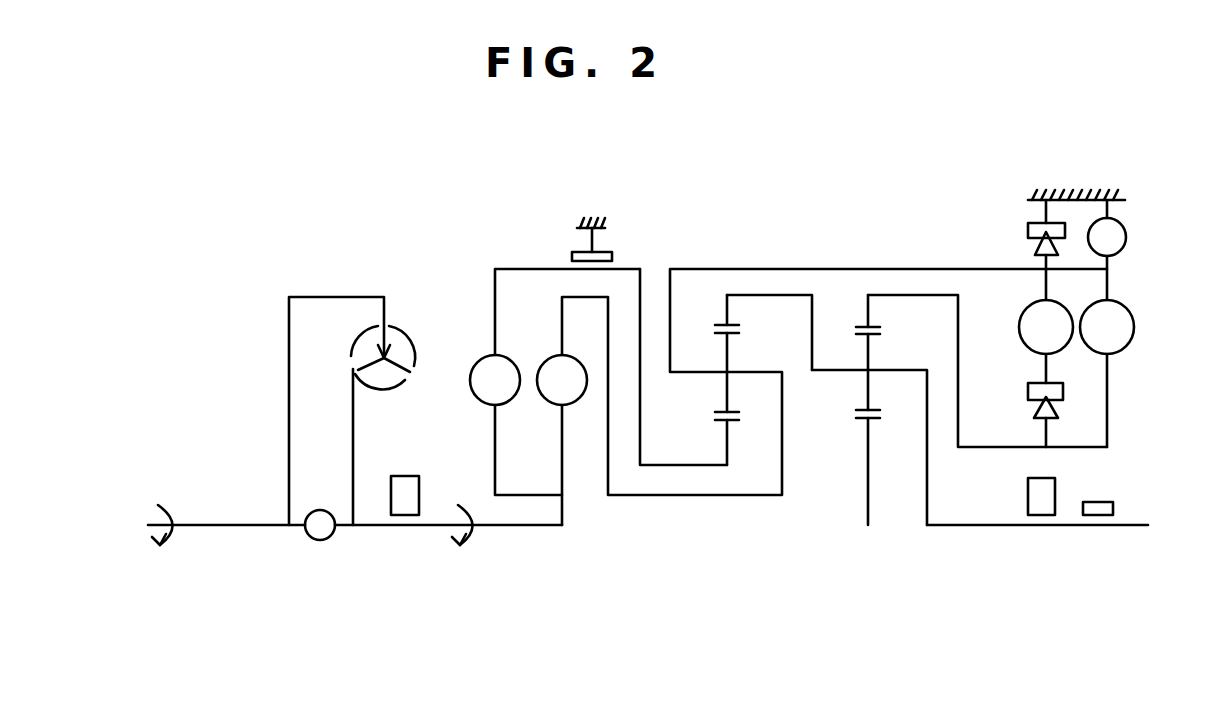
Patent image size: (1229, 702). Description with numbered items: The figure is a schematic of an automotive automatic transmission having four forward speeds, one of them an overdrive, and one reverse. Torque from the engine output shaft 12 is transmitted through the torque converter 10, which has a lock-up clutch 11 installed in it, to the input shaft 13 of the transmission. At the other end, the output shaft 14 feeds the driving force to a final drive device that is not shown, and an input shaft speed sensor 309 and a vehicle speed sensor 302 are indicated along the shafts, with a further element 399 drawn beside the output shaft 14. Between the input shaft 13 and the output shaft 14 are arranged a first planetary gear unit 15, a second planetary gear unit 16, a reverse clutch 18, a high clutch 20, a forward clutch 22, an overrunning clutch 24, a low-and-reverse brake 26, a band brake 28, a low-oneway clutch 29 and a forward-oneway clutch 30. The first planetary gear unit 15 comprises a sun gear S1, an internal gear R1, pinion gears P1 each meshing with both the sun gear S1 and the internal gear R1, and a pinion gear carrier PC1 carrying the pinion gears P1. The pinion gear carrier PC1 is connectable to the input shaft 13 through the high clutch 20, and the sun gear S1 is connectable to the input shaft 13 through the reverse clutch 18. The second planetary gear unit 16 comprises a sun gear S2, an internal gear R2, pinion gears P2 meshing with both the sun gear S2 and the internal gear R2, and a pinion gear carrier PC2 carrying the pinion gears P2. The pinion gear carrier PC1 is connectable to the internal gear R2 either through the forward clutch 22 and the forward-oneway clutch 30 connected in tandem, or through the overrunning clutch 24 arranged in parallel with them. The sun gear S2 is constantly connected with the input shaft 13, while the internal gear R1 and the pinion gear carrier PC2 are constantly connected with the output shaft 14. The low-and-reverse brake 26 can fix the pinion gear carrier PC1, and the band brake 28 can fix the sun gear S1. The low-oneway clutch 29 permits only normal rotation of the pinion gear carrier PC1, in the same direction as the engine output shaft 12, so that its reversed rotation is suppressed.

The torque converter 10 is at (410, 320).
The lock-up clutch 11 is at (322, 541).
The engine output shaft 12 is at (245, 525).
The input shaft 13 is at (414, 540).
The output shaft 14 is at (985, 525).
The first planetary gear unit 15 is at (754, 343).
The second planetary gear unit 16 is at (952, 383).
The reverse clutch 18 is at (480, 398).
The high clutch 20 is at (548, 403).
The forward clutch 22 is at (1022, 344).
The overrunning clutch 24 is at (1133, 327).
The low-and-reverse brake 26 is at (1127, 236).
The band brake 28 is at (592, 240).
The low-oneway clutch 29 is at (1028, 232).
The forward-oneway clutch 30 is at (1028, 396).
The vehicle speed sensor 302 is at (1058, 495).
The input shaft speed sensor 309 is at (399, 476).
The sensor 399 is at (1115, 508).
The internal gear R1 is at (730, 305).
The pinion gear carrier PC1 is at (809, 347).
The pinion gears P1 is at (725, 403).
The sun gear S1 is at (727, 455).
The internal gear R2 is at (872, 305).
The pinion gear carrier PC2 is at (905, 423).
The pinion gears P2 is at (866, 402).
The sun gear S2 is at (868, 500).